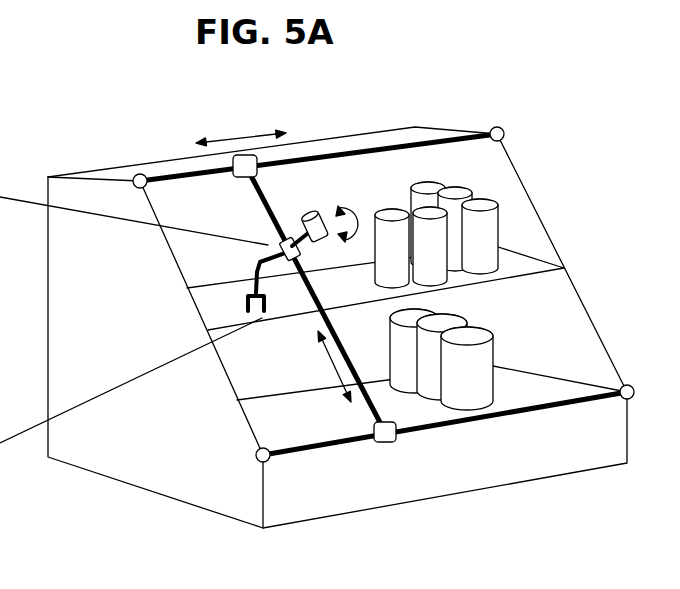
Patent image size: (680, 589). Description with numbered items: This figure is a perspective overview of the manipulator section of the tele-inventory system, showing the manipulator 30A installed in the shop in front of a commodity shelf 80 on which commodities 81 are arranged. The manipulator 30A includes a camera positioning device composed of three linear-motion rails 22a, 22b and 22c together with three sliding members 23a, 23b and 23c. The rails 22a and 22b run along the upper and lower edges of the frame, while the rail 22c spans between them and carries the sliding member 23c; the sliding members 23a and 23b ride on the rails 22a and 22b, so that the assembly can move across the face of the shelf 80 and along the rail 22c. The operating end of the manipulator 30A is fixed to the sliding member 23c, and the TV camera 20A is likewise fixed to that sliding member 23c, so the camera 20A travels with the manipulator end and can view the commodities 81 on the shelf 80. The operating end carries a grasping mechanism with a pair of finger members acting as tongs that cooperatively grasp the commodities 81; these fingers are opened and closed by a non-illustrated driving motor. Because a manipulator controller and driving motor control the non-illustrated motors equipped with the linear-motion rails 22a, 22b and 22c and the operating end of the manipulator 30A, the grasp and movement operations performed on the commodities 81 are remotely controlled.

The TV camera 20A is at (308, 234).
The linear-motion rail 22a is at (318, 163).
The linear-motion rail 22b is at (327, 438).
The linear-motion rail 22c is at (270, 225).
The sliding member 23a is at (234, 160).
The sliding member 23b is at (382, 444).
The sliding member 23c is at (303, 252).
The manipulator 30A is at (243, 290).
The commodity shelf 80 is at (591, 318).
The commodities 81 is at (487, 225).